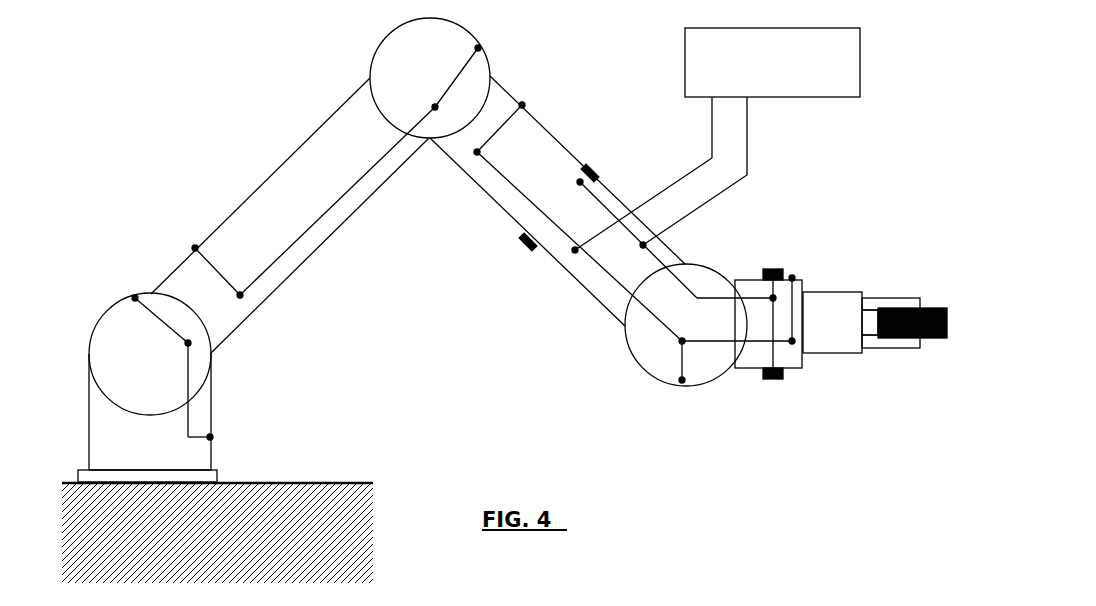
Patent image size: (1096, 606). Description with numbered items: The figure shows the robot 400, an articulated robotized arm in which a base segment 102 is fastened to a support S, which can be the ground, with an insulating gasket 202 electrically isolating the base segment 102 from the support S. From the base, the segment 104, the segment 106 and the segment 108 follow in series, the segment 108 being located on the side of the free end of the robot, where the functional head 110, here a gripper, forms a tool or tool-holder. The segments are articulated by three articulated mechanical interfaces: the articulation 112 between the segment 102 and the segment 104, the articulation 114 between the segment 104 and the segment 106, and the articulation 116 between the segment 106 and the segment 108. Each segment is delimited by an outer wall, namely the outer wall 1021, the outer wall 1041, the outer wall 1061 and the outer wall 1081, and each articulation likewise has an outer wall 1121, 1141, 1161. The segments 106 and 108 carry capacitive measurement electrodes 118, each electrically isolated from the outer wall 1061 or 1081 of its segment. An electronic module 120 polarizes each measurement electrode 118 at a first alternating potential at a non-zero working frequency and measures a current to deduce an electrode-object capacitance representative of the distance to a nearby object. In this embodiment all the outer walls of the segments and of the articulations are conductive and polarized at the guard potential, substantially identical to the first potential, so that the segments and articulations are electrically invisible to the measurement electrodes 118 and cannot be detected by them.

The robot 400 is at (172, 100).
The support S is at (215, 561).
The insulating gasket 202 is at (217, 472).
The base segment 102 is at (149, 454).
The outer wall of segment 102 1021 is at (213, 407).
The articulated mechanical interface 112 is at (152, 384).
The outer wall of articulation 112 1121 is at (93, 328).
The segment 104 is at (298, 225).
The outer wall of segment 104 1041 is at (190, 263).
The articulated mechanical interface 114 is at (418, 93).
The outer wall of articulation 114 1141 is at (370, 65).
The segment 106 is at (575, 305).
The outer wall of segment 106 1061 is at (473, 177).
The articulated mechanical interface 116 is at (713, 333).
The outer wall of articulation 116 1161 is at (632, 357).
The segment 108 is at (810, 380).
The outer wall of segment 108 1081 is at (745, 370).
The functional head 110 is at (852, 280).
The capacitive detection electrode 118 is at (600, 173).
The electronic module 120 is at (806, 66).